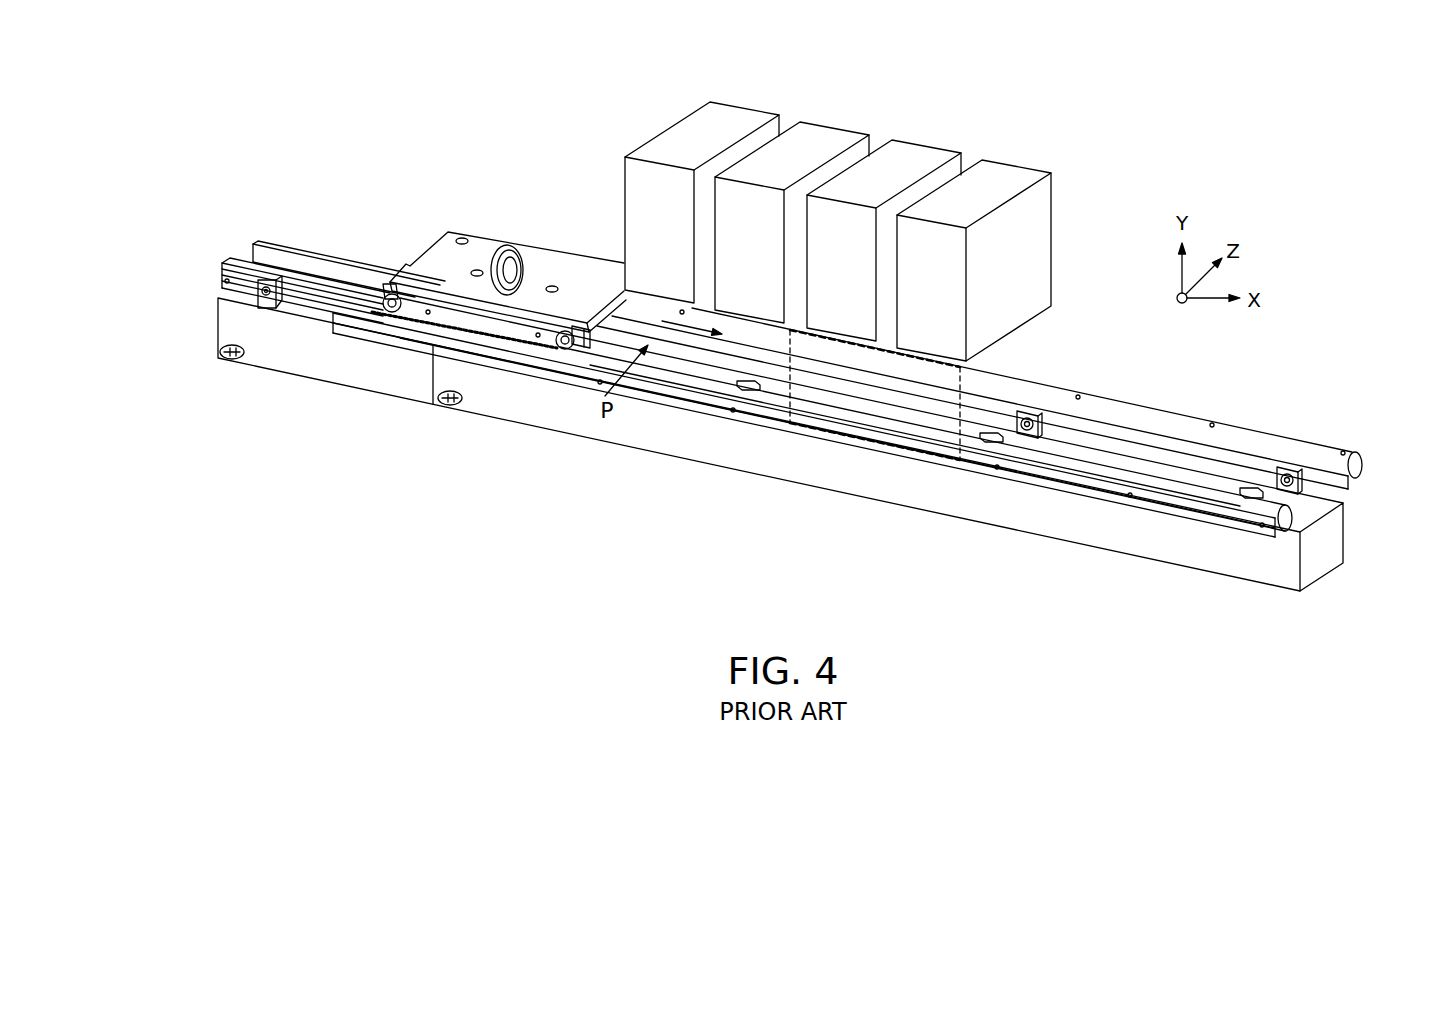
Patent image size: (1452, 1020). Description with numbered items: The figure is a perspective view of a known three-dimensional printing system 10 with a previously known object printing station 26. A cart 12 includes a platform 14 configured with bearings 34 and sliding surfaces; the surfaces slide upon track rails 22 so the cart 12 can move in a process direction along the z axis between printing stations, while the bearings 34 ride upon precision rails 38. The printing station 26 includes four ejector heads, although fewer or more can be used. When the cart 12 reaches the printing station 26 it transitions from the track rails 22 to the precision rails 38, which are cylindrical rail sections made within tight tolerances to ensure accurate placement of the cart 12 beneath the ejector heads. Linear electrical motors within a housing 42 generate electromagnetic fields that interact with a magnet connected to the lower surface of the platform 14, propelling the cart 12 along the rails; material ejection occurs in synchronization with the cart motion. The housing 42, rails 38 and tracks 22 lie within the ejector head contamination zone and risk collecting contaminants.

The printing system 10 is at (507, 530).
The cart 12 is at (455, 206).
The platform 14 is at (527, 242).
The track rails 22 is at (238, 258).
The printing station 26 is at (1055, 117).
The bearings 34 is at (390, 283).
The precision rails 38 is at (865, 454).
The housing 42 is at (1059, 527).